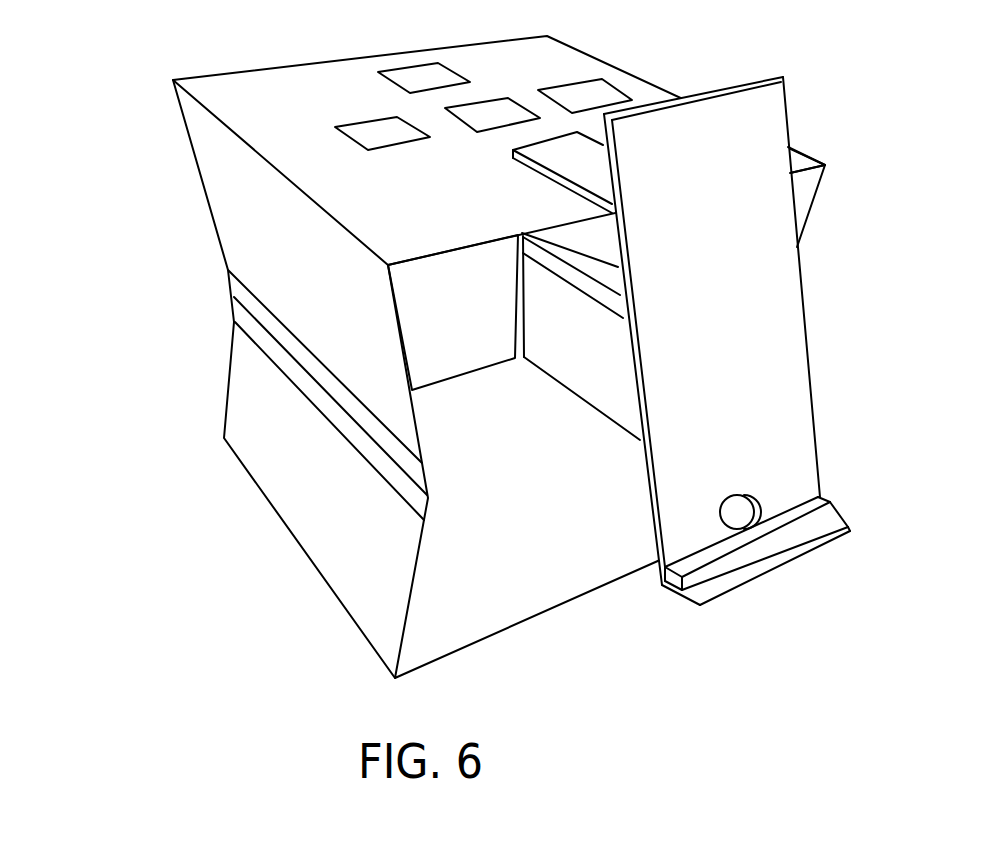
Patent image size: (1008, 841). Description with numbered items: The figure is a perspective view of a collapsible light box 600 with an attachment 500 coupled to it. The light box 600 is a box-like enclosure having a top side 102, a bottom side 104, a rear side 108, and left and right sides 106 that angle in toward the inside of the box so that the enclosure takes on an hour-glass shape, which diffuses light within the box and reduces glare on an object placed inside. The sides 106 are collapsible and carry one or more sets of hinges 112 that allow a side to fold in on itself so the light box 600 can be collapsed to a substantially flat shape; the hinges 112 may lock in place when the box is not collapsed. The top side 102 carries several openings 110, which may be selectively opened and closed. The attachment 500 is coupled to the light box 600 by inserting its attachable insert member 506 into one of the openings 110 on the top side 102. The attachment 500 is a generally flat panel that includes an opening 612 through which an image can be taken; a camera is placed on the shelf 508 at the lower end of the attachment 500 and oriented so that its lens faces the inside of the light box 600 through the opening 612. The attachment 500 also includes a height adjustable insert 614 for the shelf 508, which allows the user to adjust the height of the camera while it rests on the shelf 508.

The light box 600 is at (108, 70).
The top side 102 is at (505, 215).
The opening 110 is at (438, 75).
The side 106 is at (232, 240).
The hinges 112 is at (332, 400).
The bottom side 104 is at (503, 612).
The rear side 108 is at (470, 270).
The insert member 506 is at (556, 161).
The attachment 500 is at (801, 279).
The opening 612 is at (748, 511).
The height adjustable insert 614 is at (752, 548).
The shelf 508 is at (698, 592).